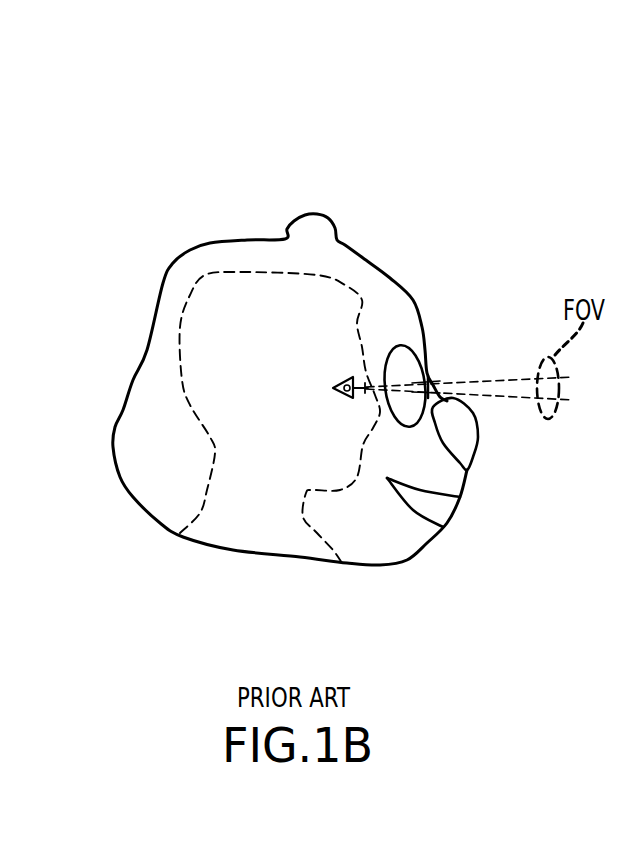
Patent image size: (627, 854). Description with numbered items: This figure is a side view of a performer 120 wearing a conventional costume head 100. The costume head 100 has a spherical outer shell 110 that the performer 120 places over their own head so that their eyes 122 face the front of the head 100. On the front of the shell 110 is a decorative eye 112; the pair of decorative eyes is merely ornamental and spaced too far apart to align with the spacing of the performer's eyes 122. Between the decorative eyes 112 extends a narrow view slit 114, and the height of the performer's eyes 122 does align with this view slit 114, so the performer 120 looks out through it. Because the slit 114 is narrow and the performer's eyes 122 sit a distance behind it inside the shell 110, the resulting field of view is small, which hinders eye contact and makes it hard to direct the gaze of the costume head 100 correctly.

The costume head 100 is at (158, 203).
The outer shell 110 is at (123, 410).
The decorative eye 112 is at (403, 345).
The view slit 114 is at (434, 381).
The performer 120 is at (317, 262).
The performer's eye 122 is at (366, 367).